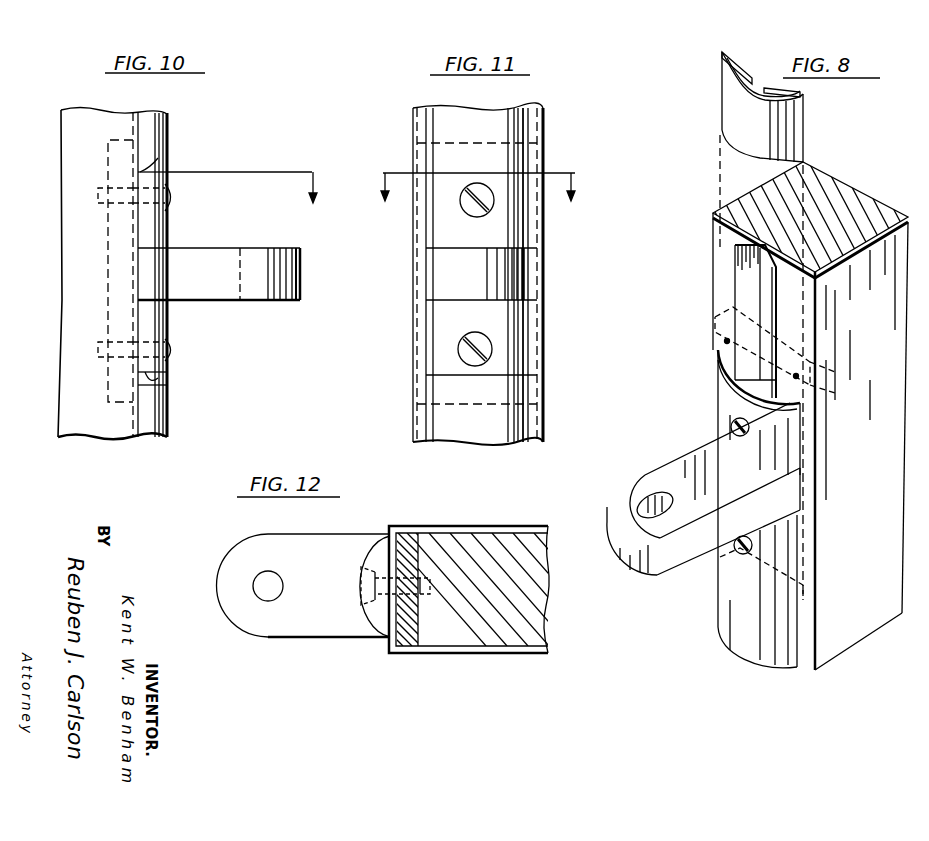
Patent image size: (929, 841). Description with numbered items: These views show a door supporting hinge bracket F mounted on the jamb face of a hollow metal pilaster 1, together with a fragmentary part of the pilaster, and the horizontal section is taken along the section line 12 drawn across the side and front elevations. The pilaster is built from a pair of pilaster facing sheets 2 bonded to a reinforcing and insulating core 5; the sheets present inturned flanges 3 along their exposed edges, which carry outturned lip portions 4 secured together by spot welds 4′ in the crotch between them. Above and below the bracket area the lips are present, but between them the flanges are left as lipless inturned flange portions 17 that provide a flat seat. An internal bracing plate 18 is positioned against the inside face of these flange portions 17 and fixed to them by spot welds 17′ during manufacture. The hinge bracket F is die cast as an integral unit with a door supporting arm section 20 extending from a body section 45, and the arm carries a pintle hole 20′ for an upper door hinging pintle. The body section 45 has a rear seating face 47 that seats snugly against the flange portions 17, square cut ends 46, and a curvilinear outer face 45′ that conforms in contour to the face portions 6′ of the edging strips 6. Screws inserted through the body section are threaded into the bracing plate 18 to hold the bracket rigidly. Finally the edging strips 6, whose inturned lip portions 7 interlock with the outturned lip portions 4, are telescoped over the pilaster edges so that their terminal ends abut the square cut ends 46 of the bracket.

In FIG. 11, the floor supported pilaster 1 is at (546, 116).
In FIG. 12, the floor supported pilaster 1 is at (483, 656).
In FIG. 8, the floor supported pilaster 1 is at (852, 182).
In FIG. 10, the pilaster facing sheets 2 is at (80, 430).
In FIG. 11, the pilaster facing sheets 2 is at (412, 121).
In FIG. 12, the pilaster facing sheets 2 is at (507, 528).
In FIG. 8, the pilaster facing sheets 2 is at (730, 194).
In FIG. 11, the inturned flanges 3 is at (424, 112).
In FIG. 8, the inturned flanges 3 is at (720, 230).
In FIG. 8, the outturned lip portions 4 is at (750, 262).
In FIG. 8, the spot welds 4′ is at (740, 250).
In FIG. 12, the reinforcing and insulating core 5 is at (542, 592).
In FIG. 8, the reinforcing and insulating core 5 is at (882, 206).
In FIG. 10, the edging strips 6 is at (168, 134).
In FIG. 11, the edging strips 6 is at (481, 113).
In FIG. 8, the edging strips 6 is at (732, 92).
In FIG. 8, the face portion of edging strip 6′ is at (736, 108).
In FIG. 8, the inturned lip portions of edging strip 7 is at (745, 66).
In FIG. 10, the section line 12— 12 is at (250, 178).
In FIG. 11, the section line 12— 12 is at (485, 177).
In FIG. 11, the inturned flange portions 17 is at (424, 245).
In FIG. 12, the inturned flange portions 17 is at (403, 540).
In FIG. 12, the spot welds 17′ is at (419, 540).
In FIG. 8, the spot welds 17′ is at (720, 338).
In FIG. 10, the internal bracing plate 18 is at (108, 221).
In FIG. 11, the internal bracing plate 18 is at (548, 146).
In FIG. 12, the internal bracing plate 18 is at (410, 650).
In FIG. 8, the internal bracing plate 18 is at (714, 322).
In FIG. 10, the door supporting arm section 20 is at (217, 292).
In FIG. 11, the door supporting arm section 20 is at (506, 275).
In FIG. 12, the door supporting arm section 20 is at (230, 591).
In FIG. 8, the door supporting arm section 20 is at (614, 542).
In FIG. 10, the pintle hole 20′ is at (242, 252).
In FIG. 12, the pintle hole 20′ is at (265, 570).
In FIG. 8, the pintle hole 20′ is at (648, 492).
In FIG. 10, the body section 45 is at (160, 223).
In FIG. 11, the body section 45 is at (445, 230).
In FIG. 12, the body section 45 is at (368, 622).
In FIG. 8, the body section 45 is at (732, 403).
In FIG. 10, the curvilinear outer face 45′ is at (150, 240).
In FIG. 12, the curvilinear outer face 45′ is at (372, 548).
In FIG. 8, the curvilinear outer face 45′ is at (735, 420).
In FIG. 10, the square cut ends 46 is at (160, 166).
In FIG. 11, the square cut ends 46 is at (460, 172).
In FIG. 8, the square cut ends 46 is at (745, 394).
In FIG. 10, the rear seating face 47 is at (160, 388).
In FIG. 8, the rear seating face 47 is at (805, 395).
In FIG. 10, the door supporting hinge bracket F is at (276, 304).
In FIG. 11, the door supporting hinge bracket F is at (440, 281).
In FIG. 12, the door supporting hinge bracket F is at (244, 640).
In FIG. 8, the door supporting hinge bracket F is at (626, 578).